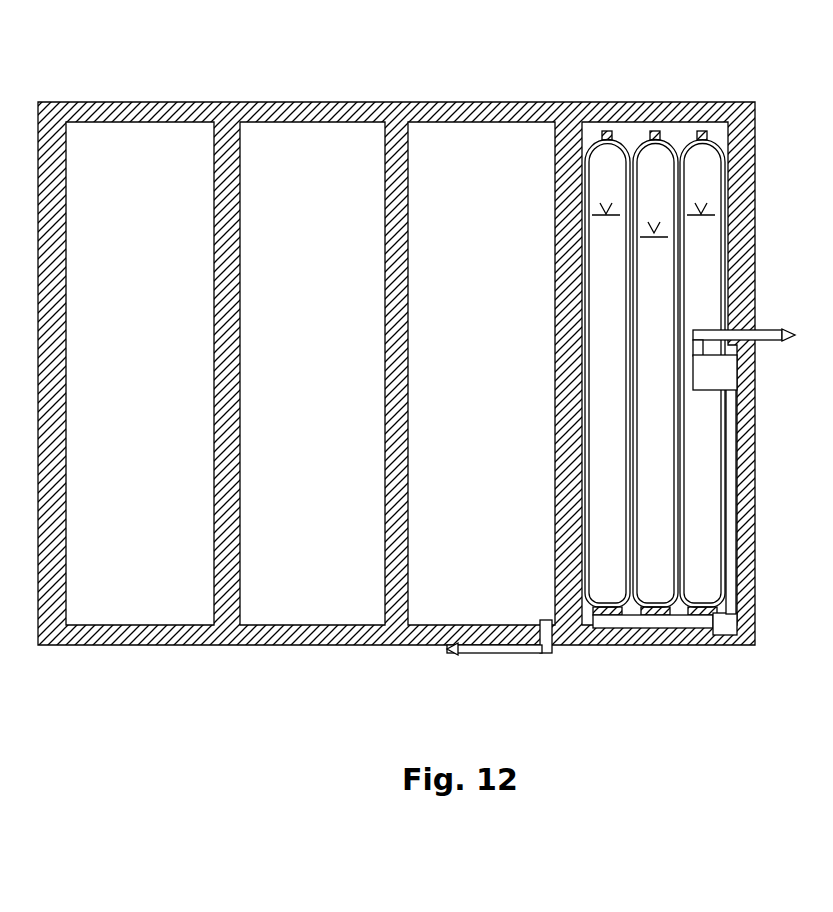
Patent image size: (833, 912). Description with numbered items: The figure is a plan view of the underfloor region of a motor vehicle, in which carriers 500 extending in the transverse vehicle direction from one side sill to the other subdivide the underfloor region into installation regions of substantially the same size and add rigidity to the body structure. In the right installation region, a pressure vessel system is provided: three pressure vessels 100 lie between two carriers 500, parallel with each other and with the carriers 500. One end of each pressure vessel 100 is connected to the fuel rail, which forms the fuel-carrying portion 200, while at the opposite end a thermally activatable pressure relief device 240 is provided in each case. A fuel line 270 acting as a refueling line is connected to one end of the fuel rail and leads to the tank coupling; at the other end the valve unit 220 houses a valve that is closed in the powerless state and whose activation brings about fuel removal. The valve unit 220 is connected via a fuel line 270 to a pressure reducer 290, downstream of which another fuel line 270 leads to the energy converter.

The pressure vessel 100 is at (590, 147).
The fuel-carrying portion 200 is at (636, 630).
The valve unit 220 is at (733, 646).
The thermally activatable pressure relief device 240 is at (713, 130).
The fuel line 270 is at (768, 343).
The pressure reducer 290 is at (715, 372).
The carrier 500 is at (66, 323).